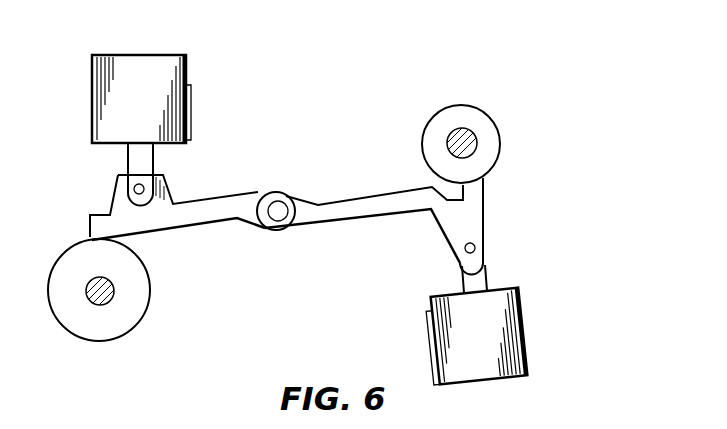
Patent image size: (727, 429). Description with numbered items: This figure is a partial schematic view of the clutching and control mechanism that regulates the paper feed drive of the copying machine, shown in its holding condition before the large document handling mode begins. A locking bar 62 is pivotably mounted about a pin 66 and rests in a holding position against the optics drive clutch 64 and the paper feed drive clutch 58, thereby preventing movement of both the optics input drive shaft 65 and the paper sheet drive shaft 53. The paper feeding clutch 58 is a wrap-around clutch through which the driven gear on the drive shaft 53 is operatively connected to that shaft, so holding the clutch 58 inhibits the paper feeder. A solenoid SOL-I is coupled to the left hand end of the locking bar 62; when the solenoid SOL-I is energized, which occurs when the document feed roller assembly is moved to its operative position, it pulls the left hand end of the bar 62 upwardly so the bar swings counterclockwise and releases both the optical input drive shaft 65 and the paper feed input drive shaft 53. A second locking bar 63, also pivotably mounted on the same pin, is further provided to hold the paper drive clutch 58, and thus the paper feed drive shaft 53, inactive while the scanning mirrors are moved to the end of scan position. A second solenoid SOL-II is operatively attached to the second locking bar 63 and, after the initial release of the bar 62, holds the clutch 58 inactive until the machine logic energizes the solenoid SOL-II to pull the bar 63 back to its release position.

The paper sheet drive shaft 53 is at (478, 140).
The paper feeding clutch 58 is at (483, 167).
The locking bar 62 is at (200, 205).
The second locking bar 63 is at (354, 205).
The clutch 64 is at (132, 308).
The optics input drive shaft 65 is at (114, 292).
The pin 66 is at (278, 206).
The solenoid SOL-I is at (183, 102).
The second solenoid SOL-II is at (510, 347).